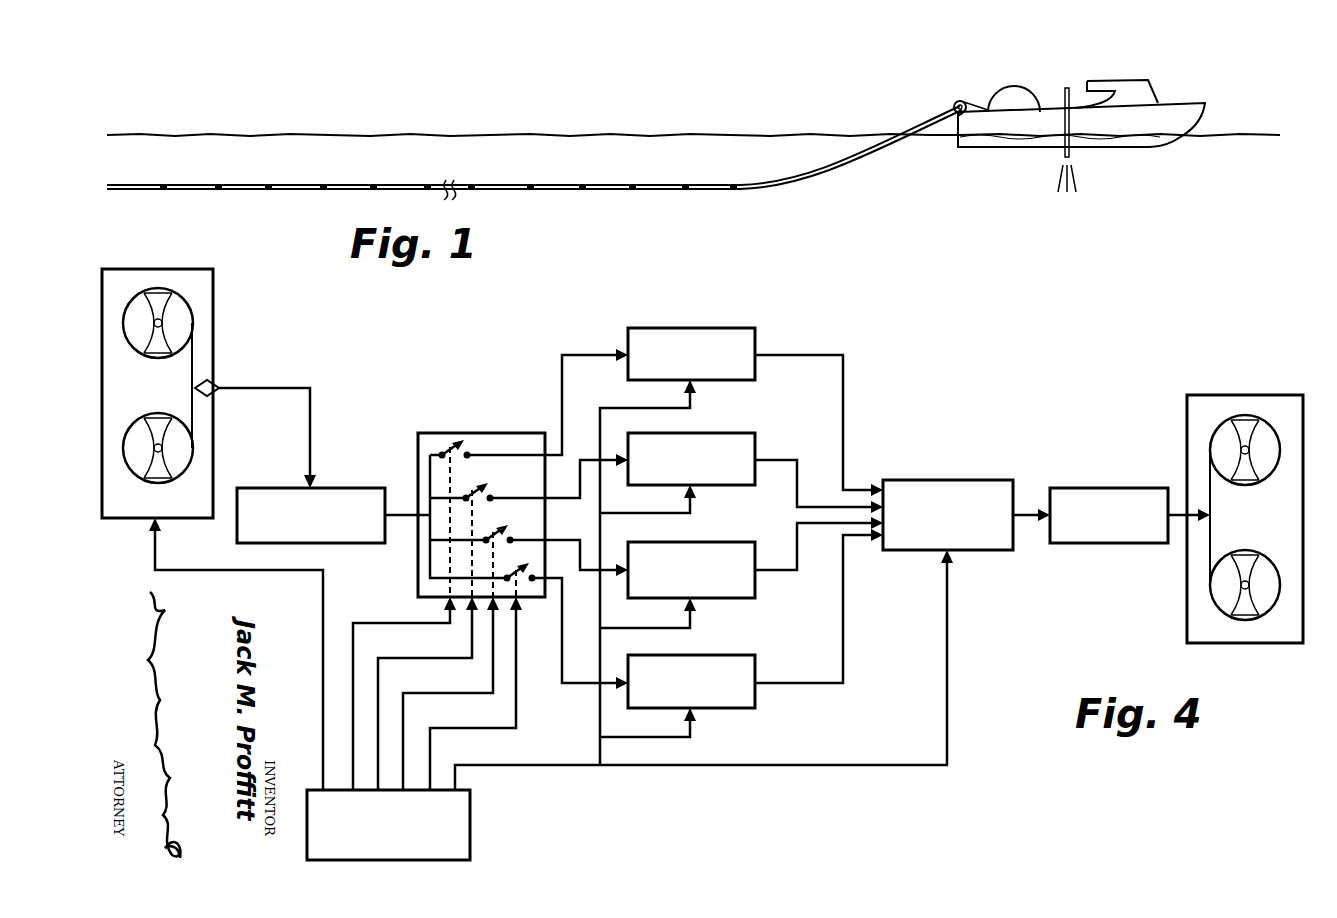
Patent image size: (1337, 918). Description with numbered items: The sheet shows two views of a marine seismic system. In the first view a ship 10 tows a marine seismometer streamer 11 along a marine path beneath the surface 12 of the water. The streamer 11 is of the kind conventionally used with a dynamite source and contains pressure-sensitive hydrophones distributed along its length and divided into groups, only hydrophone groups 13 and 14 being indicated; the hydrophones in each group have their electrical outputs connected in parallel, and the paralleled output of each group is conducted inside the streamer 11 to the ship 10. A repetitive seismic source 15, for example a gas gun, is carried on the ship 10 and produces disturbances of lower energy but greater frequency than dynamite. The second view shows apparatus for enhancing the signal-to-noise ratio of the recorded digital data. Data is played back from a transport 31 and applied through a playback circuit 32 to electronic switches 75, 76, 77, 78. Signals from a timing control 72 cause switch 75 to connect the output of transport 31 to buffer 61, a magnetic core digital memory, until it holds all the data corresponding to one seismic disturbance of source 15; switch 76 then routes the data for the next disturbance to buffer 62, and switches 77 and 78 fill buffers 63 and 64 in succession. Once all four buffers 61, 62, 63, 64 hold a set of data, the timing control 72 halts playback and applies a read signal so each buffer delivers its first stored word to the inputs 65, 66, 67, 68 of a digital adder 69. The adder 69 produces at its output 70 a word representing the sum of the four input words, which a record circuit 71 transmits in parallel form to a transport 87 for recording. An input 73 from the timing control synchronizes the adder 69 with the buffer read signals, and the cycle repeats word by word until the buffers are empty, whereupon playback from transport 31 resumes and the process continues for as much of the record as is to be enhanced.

In FIG. 1, the ship 10 is at (1189, 104).
In FIG. 1, the marine seismometer streamer 11 is at (777, 186).
In FIG. 1, the surface of the water 12 is at (633, 134).
In FIG. 1, the hydrophone group 13 is at (685, 189).
In FIG. 1, the hydrophone group 14 is at (323, 189).
In FIG. 1, the seismic source 15 is at (1060, 96).
In FIG. 4, the transport 31 is at (205, 340).
In FIG. 4, the playback circuit 32 is at (334, 496).
In FIG. 4, the buffer 61 is at (708, 328).
In FIG. 4, the buffer 62 is at (728, 434).
In FIG. 4, the buffer 63 is at (758, 544).
In FIG. 4, the buffer 64 is at (756, 668).
In FIG. 4, the input of digital adder 65 is at (844, 399).
In FIG. 4, the input of digital adder 66 is at (772, 460).
In FIG. 4, the input of digital adder 67 is at (782, 571).
In FIG. 4, the input of digital adder 68 is at (832, 684).
In FIG. 4, the digital adder 69 is at (972, 480).
In FIG. 4, the output of digital adder 70 is at (1028, 512).
In FIG. 4, the record circuit 71 is at (1102, 491).
In FIG. 4, the timing control 72 is at (454, 823).
In FIG. 4, the input from timing control to adder 73 is at (948, 667).
In FIG. 4, the electronic switch 75 is at (446, 443).
In FIG. 4, the electronic switch 76 is at (470, 487).
In FIG. 4, the electronic switch 77 is at (490, 530).
In FIG. 4, the electronic switch 78 is at (521, 567).
In FIG. 4, the transport 87 is at (1210, 400).